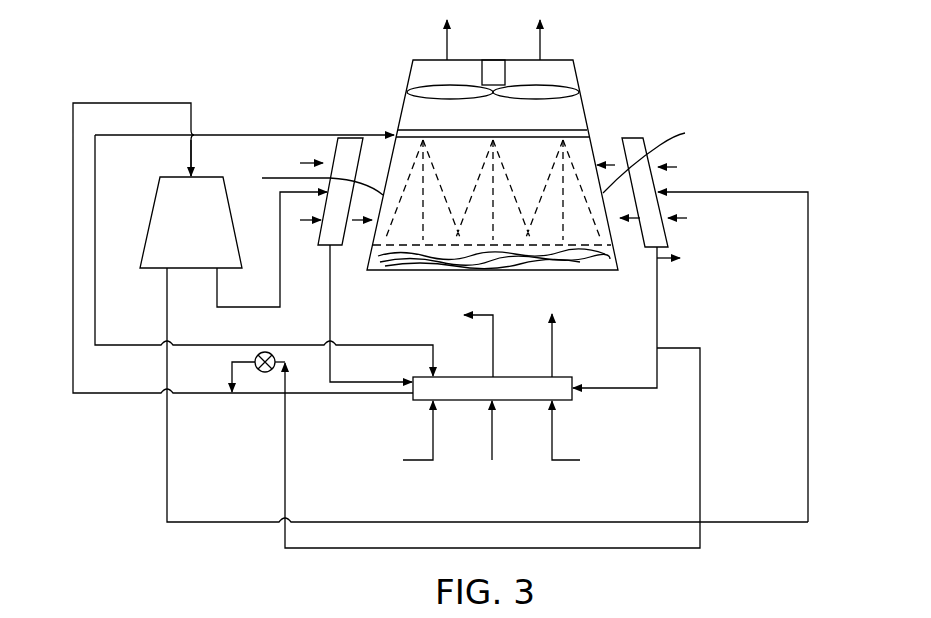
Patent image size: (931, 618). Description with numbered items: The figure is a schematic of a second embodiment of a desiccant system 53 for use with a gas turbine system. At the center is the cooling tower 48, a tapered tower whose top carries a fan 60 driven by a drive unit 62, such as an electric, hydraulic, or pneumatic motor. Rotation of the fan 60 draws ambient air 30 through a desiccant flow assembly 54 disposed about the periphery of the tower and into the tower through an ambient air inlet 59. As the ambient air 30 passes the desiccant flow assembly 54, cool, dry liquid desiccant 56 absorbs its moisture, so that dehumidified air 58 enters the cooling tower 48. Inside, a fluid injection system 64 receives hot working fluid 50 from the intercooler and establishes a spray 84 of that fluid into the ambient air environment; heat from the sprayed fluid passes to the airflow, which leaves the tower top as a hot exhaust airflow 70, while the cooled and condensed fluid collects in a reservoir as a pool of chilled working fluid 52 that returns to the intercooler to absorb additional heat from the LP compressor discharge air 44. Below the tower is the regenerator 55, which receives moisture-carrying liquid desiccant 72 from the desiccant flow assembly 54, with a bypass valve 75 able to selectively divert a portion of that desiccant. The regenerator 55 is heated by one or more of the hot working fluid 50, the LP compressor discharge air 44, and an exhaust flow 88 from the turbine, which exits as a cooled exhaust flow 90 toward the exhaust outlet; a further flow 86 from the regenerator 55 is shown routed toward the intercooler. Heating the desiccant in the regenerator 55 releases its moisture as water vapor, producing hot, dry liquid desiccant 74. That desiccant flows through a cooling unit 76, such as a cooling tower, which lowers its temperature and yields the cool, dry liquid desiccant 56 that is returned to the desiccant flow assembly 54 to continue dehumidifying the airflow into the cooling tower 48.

The ambient air 30 is at (302, 162).
The LP compressor discharge air 44 is at (493, 438).
The cooling tower 48 is at (565, 60).
The hot working fluid 50 is at (433, 430).
The chilled working fluid 52 is at (398, 262).
The desiccant system 53 is at (702, 70).
The desiccant flow assembly 54 is at (352, 138).
The regenerator 55 is at (455, 402).
The liquid desiccant 56 is at (280, 250).
The dehumidified air 58 is at (380, 133).
The ambient air inlet 59 is at (472, 158).
The fan 60 is at (448, 92).
The drive unit 62 is at (505, 75).
The fluid injection system 64 is at (475, 130).
The hot exhaust airflow 70 is at (445, 40).
The moisture-carrying liquid desiccant 72 is at (330, 318).
The hot, dry liquid desiccant 74 is at (125, 103).
The bypass valve 75 is at (262, 373).
The cooling unit 76 is at (150, 223).
The spray of hot working fluid 84 is at (455, 200).
The line to intercooler 86 is at (493, 345).
The exhaust flow 88 is at (553, 430).
The cooled exhaust flow 90 is at (553, 345).